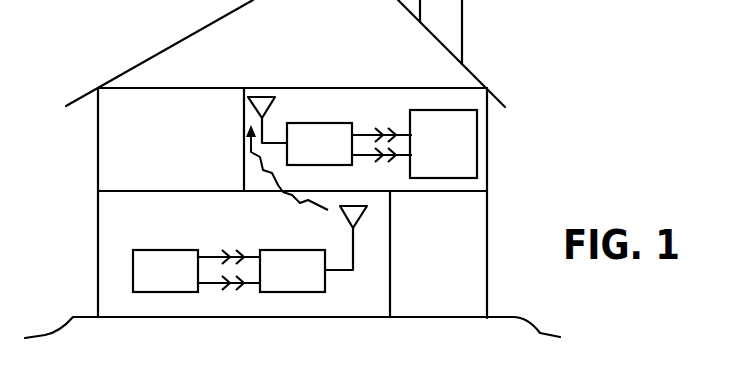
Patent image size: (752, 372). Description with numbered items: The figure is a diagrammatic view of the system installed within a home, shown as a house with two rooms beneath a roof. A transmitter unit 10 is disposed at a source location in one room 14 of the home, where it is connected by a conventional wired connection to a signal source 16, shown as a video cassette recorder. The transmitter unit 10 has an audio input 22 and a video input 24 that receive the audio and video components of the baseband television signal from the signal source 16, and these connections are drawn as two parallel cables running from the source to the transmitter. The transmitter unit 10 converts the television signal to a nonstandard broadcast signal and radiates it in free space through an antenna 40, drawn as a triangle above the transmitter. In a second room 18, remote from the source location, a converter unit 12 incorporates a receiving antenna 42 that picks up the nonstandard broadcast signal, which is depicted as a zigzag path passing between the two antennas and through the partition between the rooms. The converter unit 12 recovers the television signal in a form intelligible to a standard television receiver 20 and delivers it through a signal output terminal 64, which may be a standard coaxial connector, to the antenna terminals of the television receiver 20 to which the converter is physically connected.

The transmitter unit 10 is at (310, 303).
The converter unit 12 is at (320, 112).
The room 14 is at (155, 235).
The signal source 16 is at (182, 303).
The room 18 is at (436, 94).
The television receiver 20 is at (484, 164).
The audio input 22 is at (210, 251).
The video input 24 is at (212, 288).
The antenna 40 is at (361, 218).
The receiving antenna 42 is at (262, 93).
The signal output terminal 64 is at (366, 120).